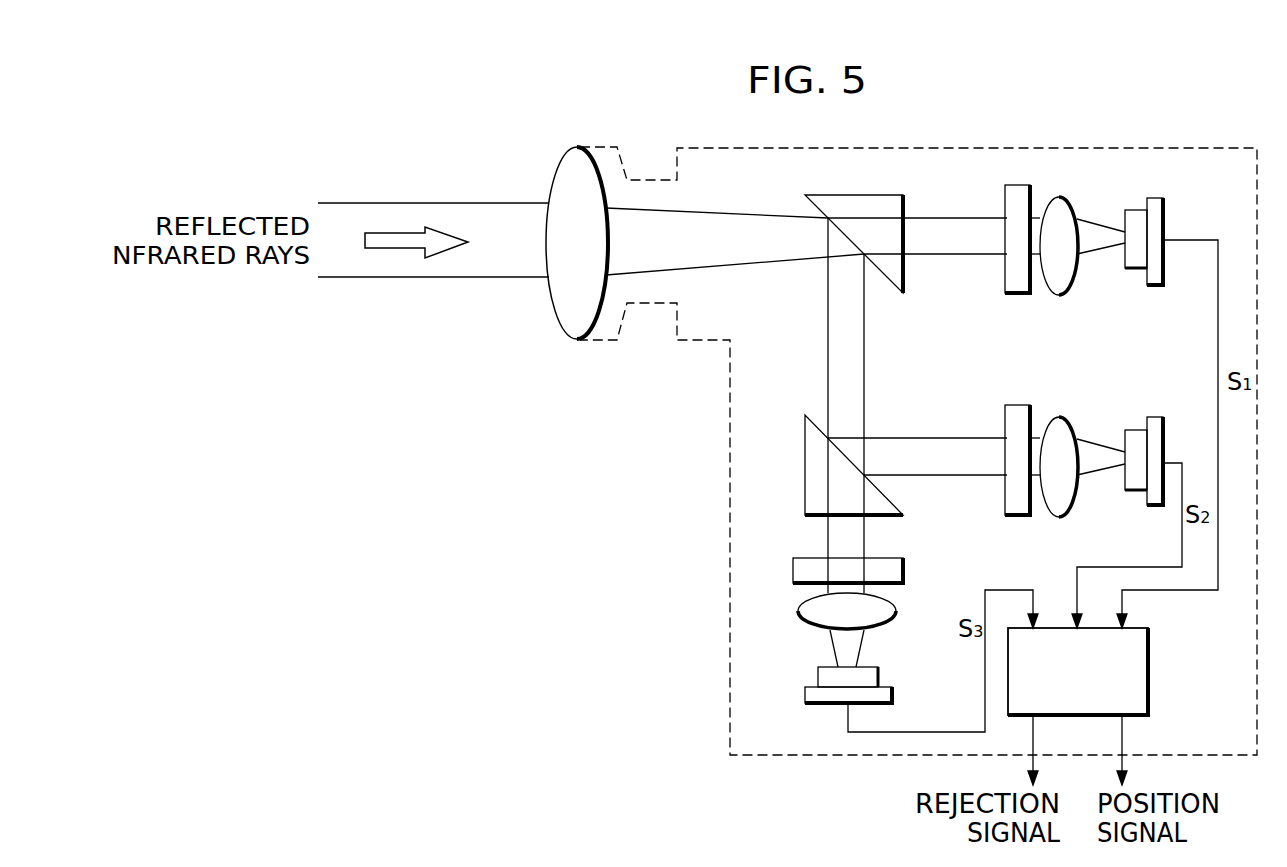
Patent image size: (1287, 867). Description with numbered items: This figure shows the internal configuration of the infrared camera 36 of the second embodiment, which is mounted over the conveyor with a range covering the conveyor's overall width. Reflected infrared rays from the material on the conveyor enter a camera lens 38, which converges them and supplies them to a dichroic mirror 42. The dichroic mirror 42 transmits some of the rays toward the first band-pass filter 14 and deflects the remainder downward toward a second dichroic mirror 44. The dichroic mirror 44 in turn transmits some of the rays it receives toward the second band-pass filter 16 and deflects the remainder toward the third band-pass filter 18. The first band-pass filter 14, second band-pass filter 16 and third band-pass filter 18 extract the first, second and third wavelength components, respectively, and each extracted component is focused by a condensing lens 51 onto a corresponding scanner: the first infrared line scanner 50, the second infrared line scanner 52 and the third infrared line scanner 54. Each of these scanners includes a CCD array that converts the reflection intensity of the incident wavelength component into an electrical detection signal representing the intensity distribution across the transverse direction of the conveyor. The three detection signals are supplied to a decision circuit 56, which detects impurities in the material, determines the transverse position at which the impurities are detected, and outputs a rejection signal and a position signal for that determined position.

The infrared camera 36 is at (730, 403).
The camera lens 38 is at (551, 305).
The dichroic mirror 42 is at (905, 200).
The dichroic mirror 44 is at (805, 428).
The first band-pass filter 14 is at (1020, 296).
The third band-pass filter 18 is at (1005, 502).
The second band-pass filter 16 is at (905, 571).
The condensing lens 51 is at (1059, 297).
The first infrared line scanner 50 is at (1132, 270).
The third infrared line scanner 54 is at (1132, 492).
The second infrared line scanner 52 is at (880, 672).
The decision circuit 56 is at (1150, 640).